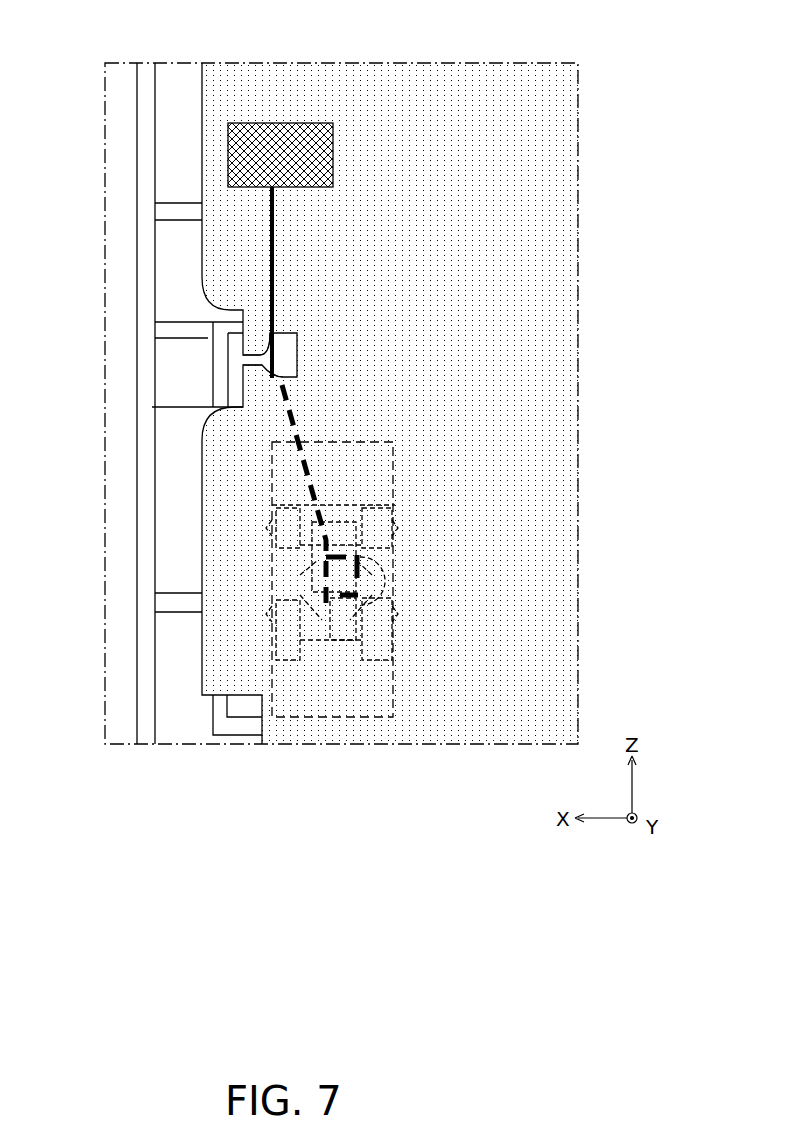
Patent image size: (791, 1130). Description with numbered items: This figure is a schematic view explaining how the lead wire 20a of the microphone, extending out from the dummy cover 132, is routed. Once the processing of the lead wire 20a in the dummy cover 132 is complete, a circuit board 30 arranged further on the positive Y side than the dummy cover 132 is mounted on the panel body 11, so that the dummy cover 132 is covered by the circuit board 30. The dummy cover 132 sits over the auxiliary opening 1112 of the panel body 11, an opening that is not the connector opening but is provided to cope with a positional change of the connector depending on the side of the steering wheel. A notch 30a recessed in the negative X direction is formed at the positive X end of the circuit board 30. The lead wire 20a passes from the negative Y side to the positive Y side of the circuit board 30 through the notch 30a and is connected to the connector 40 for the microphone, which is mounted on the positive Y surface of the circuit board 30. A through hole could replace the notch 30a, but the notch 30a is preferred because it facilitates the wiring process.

The panel body 11 is at (168, 520).
The lead wire 20a is at (270, 263).
The circuit board 30 is at (548, 303).
The notch 30a is at (243, 361).
The connector for the microphone 40 is at (272, 123).
The dummy cover 132 is at (345, 742).
The auxiliary opening 1112 is at (392, 488).